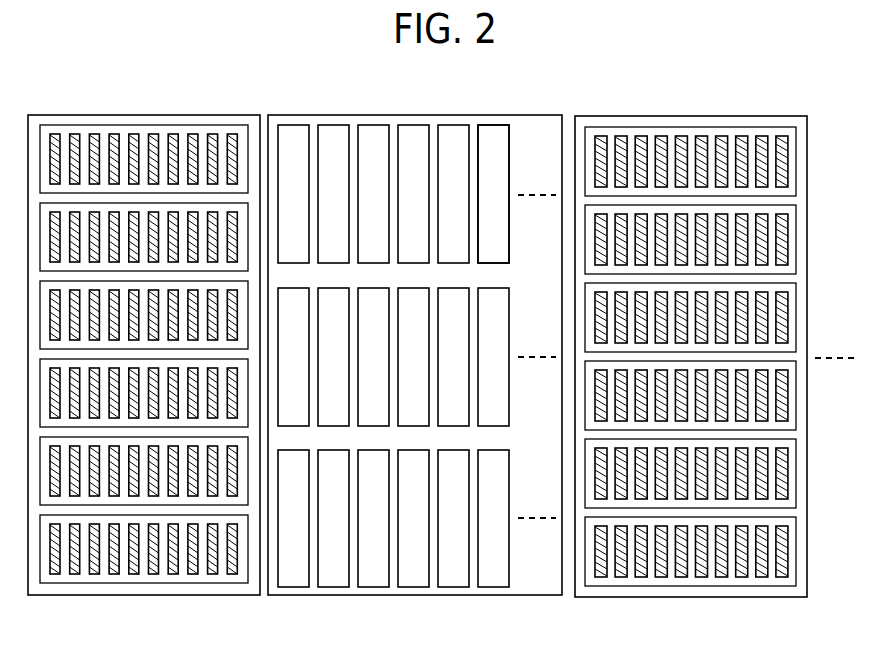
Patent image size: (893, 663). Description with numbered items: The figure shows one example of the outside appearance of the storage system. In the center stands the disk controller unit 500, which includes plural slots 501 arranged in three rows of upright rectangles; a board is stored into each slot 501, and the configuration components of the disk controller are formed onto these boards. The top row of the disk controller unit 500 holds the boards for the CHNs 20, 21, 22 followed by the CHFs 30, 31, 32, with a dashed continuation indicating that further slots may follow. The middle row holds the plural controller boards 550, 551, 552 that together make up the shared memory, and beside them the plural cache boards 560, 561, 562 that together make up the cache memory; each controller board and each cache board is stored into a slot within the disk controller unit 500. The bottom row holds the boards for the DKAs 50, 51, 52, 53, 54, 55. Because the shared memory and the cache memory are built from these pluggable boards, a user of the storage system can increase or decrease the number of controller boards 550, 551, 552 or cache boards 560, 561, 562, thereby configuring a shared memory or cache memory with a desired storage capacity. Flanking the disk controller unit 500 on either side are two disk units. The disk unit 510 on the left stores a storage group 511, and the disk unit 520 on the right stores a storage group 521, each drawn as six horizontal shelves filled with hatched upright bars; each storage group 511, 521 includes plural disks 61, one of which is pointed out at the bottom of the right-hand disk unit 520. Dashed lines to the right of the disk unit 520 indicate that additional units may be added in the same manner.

The disk controller unit 500 is at (415, 333).
The slot 501 is at (490, 124).
The disk unit 510 is at (152, 332).
The storage group 511 is at (215, 125).
The disk unit 520 is at (699, 356).
The storage group 521 is at (763, 127).
The disk 61 is at (698, 578).
The CHN 20 is at (293, 194).
The CHN 21 is at (333, 194).
The CHN 22 is at (373, 194).
The CHF 30 is at (413, 194).
The CHF 31 is at (453, 194).
The CHF 32 is at (493, 194).
The controller board 550 is at (293, 357).
The controller board 551 is at (333, 357).
The controller board 552 is at (373, 357).
The cache board 560 is at (413, 357).
The cache board 561 is at (453, 357).
The cache board 562 is at (493, 357).
The DKA 50 is at (293, 518).
The DKA 51 is at (333, 518).
The DKA 52 is at (373, 518).
The DKA 53 is at (413, 518).
The DKA 54 is at (453, 518).
The DKA 55 is at (493, 518).